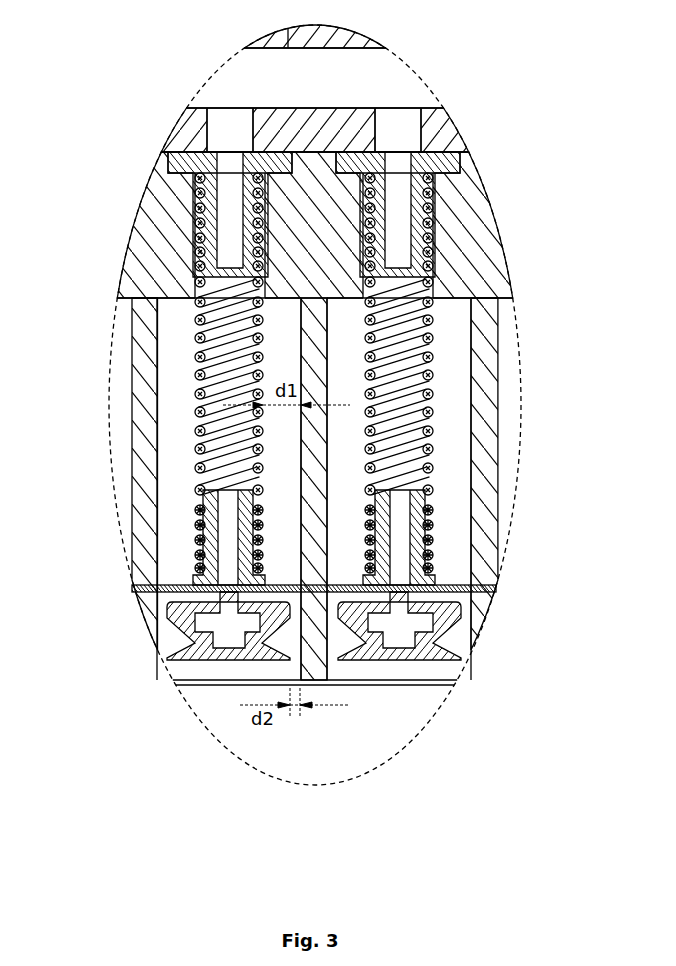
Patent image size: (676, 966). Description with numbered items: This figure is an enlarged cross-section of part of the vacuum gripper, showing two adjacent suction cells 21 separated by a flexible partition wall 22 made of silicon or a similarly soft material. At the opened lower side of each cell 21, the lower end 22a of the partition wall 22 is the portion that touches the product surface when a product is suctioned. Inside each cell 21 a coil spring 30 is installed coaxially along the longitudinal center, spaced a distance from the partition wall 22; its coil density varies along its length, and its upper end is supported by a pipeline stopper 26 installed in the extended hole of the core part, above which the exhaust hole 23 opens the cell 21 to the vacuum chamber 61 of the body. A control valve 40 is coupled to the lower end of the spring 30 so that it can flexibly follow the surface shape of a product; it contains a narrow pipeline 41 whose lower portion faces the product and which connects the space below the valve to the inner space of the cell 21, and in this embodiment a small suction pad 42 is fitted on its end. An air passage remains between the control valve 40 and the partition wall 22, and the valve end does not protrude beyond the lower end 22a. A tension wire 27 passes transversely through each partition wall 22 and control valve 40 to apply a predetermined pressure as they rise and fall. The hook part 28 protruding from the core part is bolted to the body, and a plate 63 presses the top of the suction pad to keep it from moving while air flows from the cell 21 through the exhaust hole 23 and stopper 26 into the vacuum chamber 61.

The suction cell 21 is at (187, 444).
The partition wall 22 is at (132, 390).
The lower end of the partition wall 22a is at (330, 650).
The exhaust hole 23 is at (435, 258).
The pipeline stopper 26 is at (438, 152).
The tension wire 27 is at (453, 585).
The hook part 28 is at (150, 237).
The spring 30 is at (428, 372).
The control valve 40 is at (197, 520).
The pipeline 41 is at (197, 553).
The suction pad 42 is at (185, 612).
The vacuum chamber 61 is at (318, 91).
The plate 63 is at (337, 128).